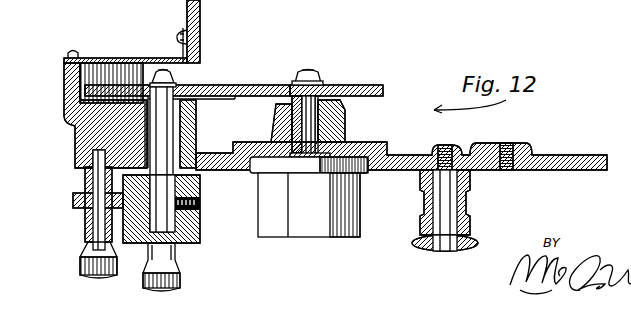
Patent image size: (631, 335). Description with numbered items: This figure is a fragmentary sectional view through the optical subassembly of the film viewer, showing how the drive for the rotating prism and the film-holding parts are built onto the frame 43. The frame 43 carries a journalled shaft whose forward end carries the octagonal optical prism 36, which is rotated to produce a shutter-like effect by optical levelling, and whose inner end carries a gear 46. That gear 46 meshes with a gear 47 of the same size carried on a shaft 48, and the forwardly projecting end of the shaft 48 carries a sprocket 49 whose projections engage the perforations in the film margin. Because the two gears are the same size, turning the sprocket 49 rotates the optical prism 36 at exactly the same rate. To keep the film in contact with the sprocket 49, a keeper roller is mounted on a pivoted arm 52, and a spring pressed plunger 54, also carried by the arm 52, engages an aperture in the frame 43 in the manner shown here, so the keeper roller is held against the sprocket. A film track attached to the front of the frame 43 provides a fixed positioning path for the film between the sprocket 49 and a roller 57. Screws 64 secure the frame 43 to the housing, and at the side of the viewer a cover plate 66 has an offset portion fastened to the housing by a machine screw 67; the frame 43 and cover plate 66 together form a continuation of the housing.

The octagonal optical prism 36 is at (304, 237).
The frame 43 is at (88, 140).
The gear 46 is at (366, 83).
The gear 47 is at (218, 85).
The shaft 48 is at (165, 68).
The sprocket 49 is at (188, 244).
The arm 52 is at (80, 207).
The spring pressed plunger 54 is at (90, 276).
The roller 57 is at (462, 251).
The screws 64 is at (503, 170).
The cover plate 66 is at (100, 58).
The machine screw 67 is at (199, 40).